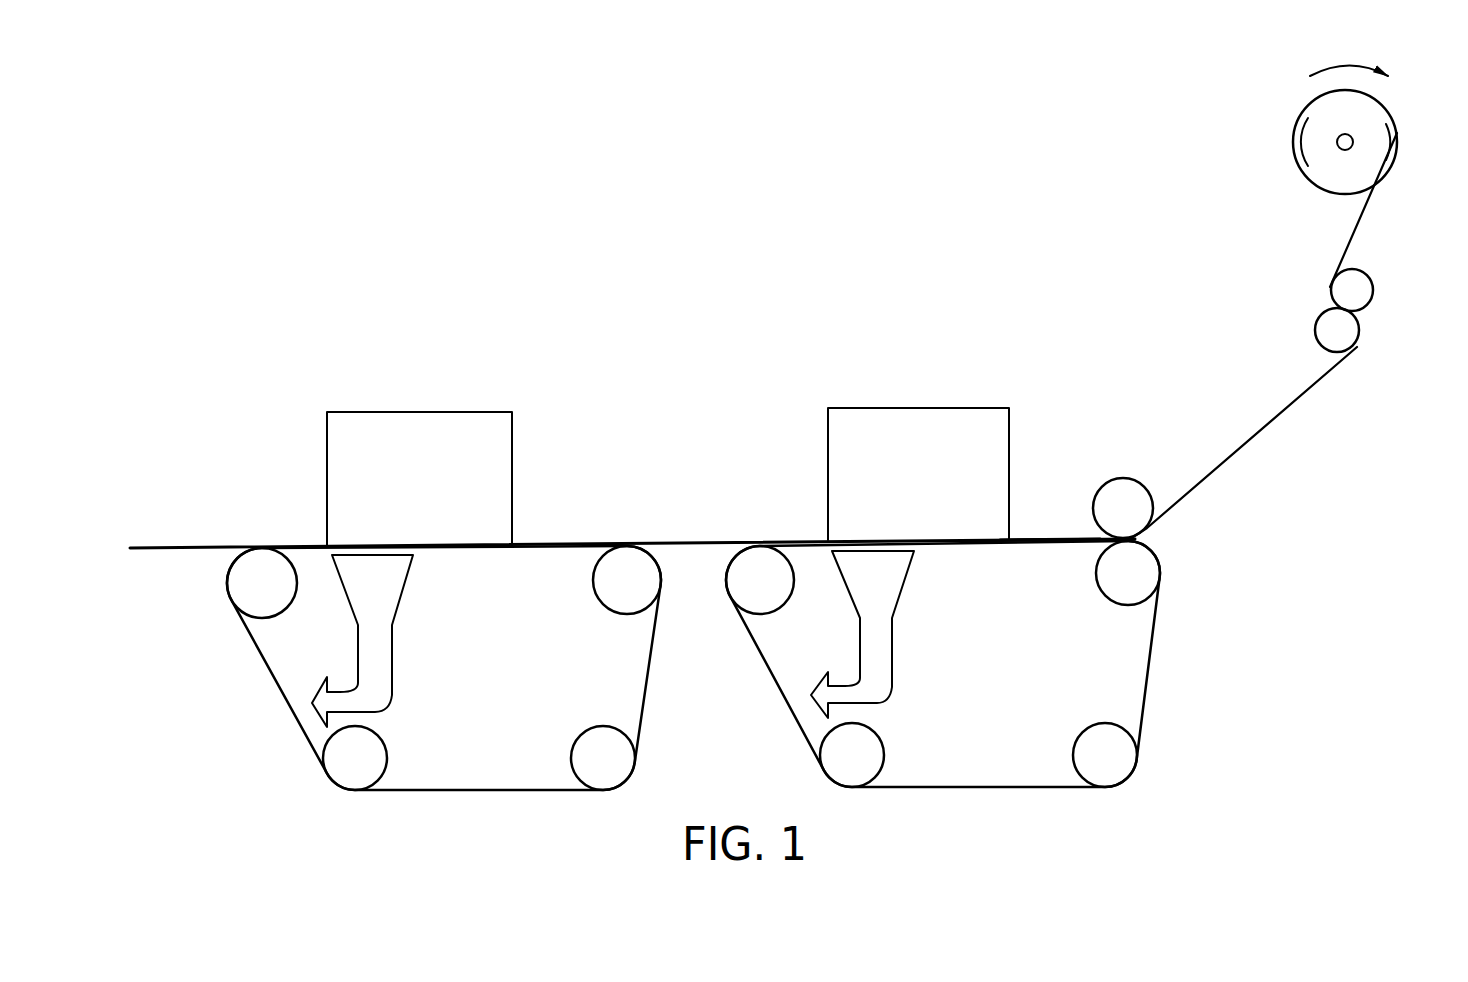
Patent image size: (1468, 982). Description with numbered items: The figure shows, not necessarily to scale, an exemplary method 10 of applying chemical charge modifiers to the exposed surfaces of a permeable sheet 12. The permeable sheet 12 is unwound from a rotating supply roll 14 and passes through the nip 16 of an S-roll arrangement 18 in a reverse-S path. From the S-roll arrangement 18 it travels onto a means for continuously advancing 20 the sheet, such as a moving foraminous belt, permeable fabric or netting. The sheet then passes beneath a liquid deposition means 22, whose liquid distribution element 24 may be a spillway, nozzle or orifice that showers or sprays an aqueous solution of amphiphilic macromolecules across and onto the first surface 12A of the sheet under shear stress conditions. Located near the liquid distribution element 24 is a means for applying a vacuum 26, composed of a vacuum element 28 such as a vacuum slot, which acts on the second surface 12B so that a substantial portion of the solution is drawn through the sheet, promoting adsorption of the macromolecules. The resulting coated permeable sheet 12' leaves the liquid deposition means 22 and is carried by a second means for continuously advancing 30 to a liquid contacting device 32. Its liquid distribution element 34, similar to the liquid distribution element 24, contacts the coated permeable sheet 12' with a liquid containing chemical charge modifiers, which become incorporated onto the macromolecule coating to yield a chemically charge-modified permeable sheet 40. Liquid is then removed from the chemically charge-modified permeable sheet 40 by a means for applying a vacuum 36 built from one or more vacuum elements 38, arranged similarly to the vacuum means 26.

The method of applying chemical charge-modifiers 10 is at (1056, 125).
The permeable sheet 12 is at (1262, 337).
The coated permeable sheet 12' is at (632, 511).
The first surface 12A is at (1042, 538).
The second surface 12B is at (1024, 544).
The supply roll 14 is at (1397, 125).
The nip 16 is at (1298, 313).
The S-roll arrangement 18 is at (1396, 351).
The means for continuously advancing the permeable sheet 20 is at (1188, 594).
The liquid deposition means 22 is at (928, 522).
The liquid distribution element 24 is at (929, 478).
The means for applying a vacuum 26 is at (877, 705).
The vacuum element 28 is at (888, 601).
The second means for continuously advancing the coated permeable sheet 30 is at (683, 604).
The liquid contacting device 32 is at (426, 532).
The liquid distribution element 34 is at (430, 481).
The means for applying a vacuum 36 is at (387, 711).
The vacuum element 38 is at (388, 602).
The chemically charge-modified permeable sheet 40 is at (257, 547).